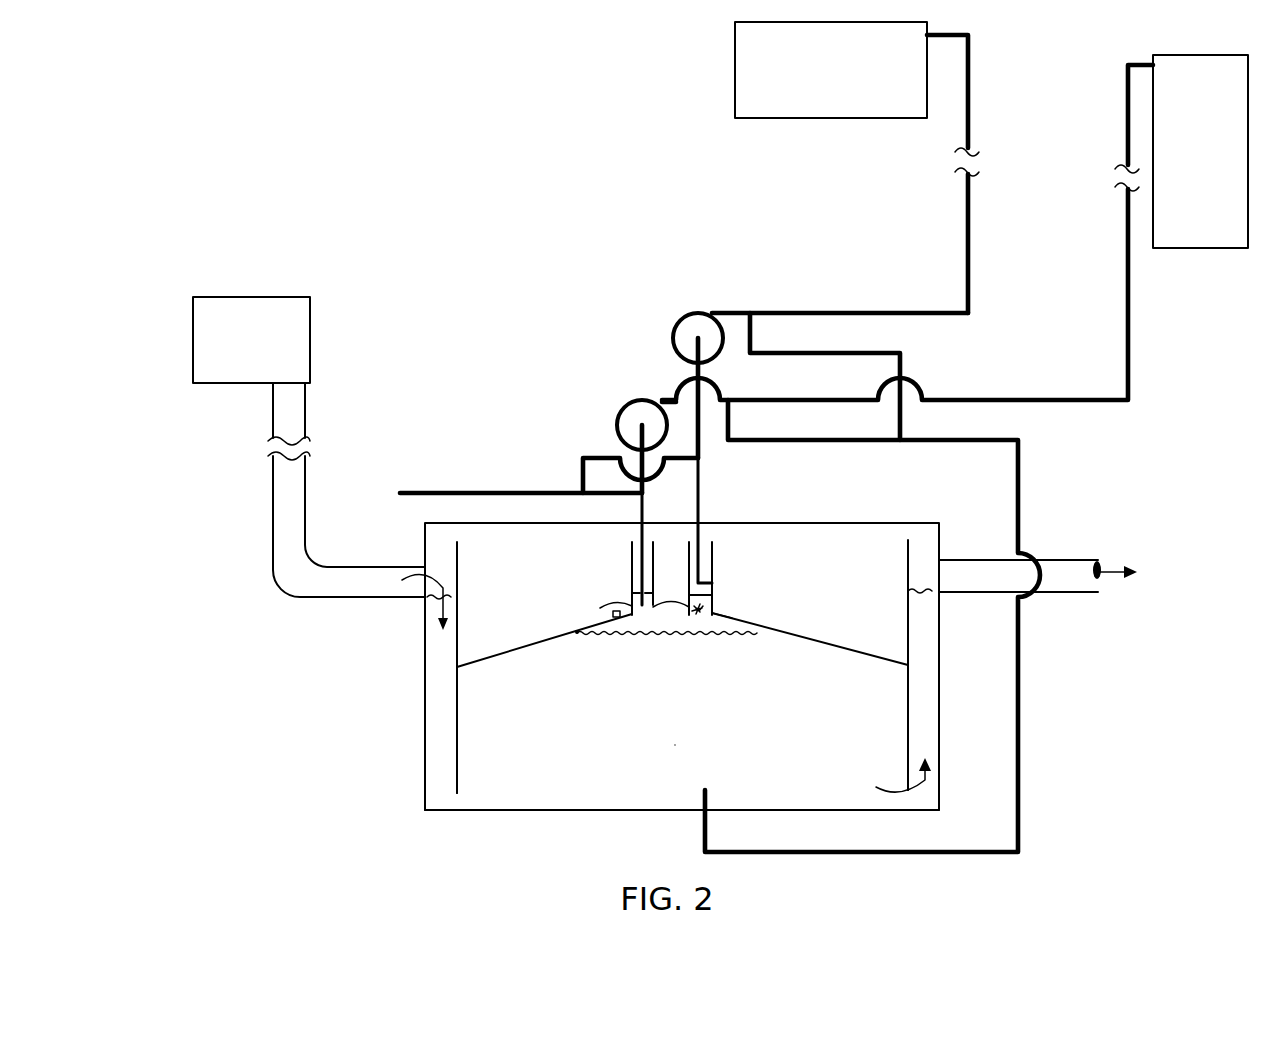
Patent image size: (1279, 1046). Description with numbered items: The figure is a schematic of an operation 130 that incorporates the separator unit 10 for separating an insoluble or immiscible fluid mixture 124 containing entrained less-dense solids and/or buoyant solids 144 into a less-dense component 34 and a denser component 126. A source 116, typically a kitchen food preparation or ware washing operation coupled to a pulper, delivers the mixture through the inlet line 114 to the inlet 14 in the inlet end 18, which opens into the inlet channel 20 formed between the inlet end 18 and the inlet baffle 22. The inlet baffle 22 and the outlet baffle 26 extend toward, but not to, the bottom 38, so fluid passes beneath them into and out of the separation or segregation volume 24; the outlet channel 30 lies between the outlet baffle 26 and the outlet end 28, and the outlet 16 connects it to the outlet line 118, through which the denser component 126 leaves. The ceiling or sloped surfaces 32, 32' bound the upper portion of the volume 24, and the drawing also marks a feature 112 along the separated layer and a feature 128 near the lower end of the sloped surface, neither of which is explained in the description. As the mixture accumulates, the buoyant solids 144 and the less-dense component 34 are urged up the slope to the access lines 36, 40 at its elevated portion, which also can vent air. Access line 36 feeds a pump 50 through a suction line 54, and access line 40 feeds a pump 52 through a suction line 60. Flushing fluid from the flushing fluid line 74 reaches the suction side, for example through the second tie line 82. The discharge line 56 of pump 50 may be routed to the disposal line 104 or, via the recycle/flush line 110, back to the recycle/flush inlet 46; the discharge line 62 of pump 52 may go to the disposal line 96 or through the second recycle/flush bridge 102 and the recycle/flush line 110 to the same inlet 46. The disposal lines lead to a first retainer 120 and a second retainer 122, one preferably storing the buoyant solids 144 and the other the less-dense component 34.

The separator unit 10 is at (404, 830).
The inlet 14 is at (425, 562).
The outlet 16 is at (940, 598).
The inlet end 18 is at (428, 768).
The inlet channel 20 is at (437, 712).
The inlet baffle 22 is at (458, 773).
The separation or segregation volume 24 is at (660, 750).
The outlet baffle 26 is at (905, 700).
The outlet end 28 is at (942, 732).
The outlet channel 30 is at (920, 668).
The ceiling or sloped surface 32 is at (544, 663).
The ceiling or sloped surface 32' is at (810, 657).
The less-dense component 34 is at (733, 623).
The access line 36 is at (632, 597).
The bottom 38 is at (563, 815).
The access line 40 is at (713, 583).
The recycle/flush inlet 46 is at (690, 797).
The pump 50 is at (599, 460).
The pump 52 is at (676, 406).
The suction line 54 is at (618, 432).
The discharge line 56 is at (665, 400).
The suction line 60 is at (702, 336).
The discharge line 62 is at (738, 312).
The flushing fluid line 74 is at (453, 492).
The second tie line 82 is at (583, 460).
The disposal line 96 is at (966, 272).
The second recycle/flush bridge 102 is at (870, 352).
The disposal line 104 is at (1130, 365).
The recycle/flush line 110 is at (1022, 745).
The liquid surface 112 is at (633, 645).
The inlet line 114 is at (335, 583).
The source 116 is at (232, 355).
The outlet line 118 is at (1048, 594).
The first retainer 120 is at (811, 85).
The second retainer 122 is at (1182, 161).
The insoluble or immiscible fluid mixture 124 is at (413, 583).
The denser component 126 is at (1110, 568).
The orifice 128 is at (614, 612).
The operation 130 is at (341, 178).
The less-dense solids and/or buoyant solids 144 is at (712, 600).